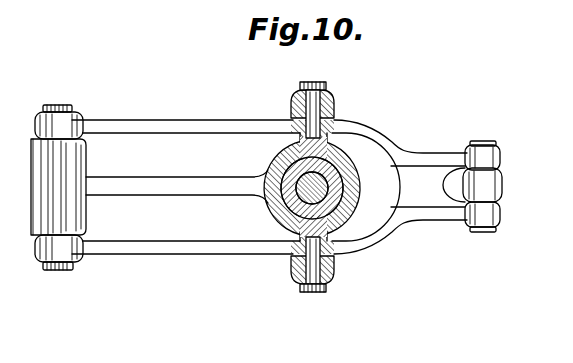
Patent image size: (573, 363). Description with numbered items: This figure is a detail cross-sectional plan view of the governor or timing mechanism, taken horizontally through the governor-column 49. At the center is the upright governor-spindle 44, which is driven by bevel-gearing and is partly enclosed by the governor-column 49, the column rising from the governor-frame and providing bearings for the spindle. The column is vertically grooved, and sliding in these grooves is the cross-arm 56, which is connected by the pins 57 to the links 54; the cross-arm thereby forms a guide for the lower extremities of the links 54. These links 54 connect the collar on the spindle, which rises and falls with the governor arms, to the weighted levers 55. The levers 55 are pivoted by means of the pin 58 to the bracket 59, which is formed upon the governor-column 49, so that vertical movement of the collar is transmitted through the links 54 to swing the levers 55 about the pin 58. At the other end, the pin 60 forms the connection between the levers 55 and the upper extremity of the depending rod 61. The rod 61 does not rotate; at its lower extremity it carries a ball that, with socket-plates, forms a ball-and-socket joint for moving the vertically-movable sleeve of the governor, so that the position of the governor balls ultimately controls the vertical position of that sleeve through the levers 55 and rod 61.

The governor-spindle 44 is at (313, 189).
The governor-column 49 is at (272, 216).
The links 54 is at (292, 96).
The weighted levers 55 is at (156, 129).
The cross-arm 56 is at (273, 167).
The pins 57 is at (321, 84).
The pin 58 is at (62, 270).
The bracket 59 is at (150, 187).
The pin 60 is at (483, 227).
The depending rod 61 is at (502, 180).